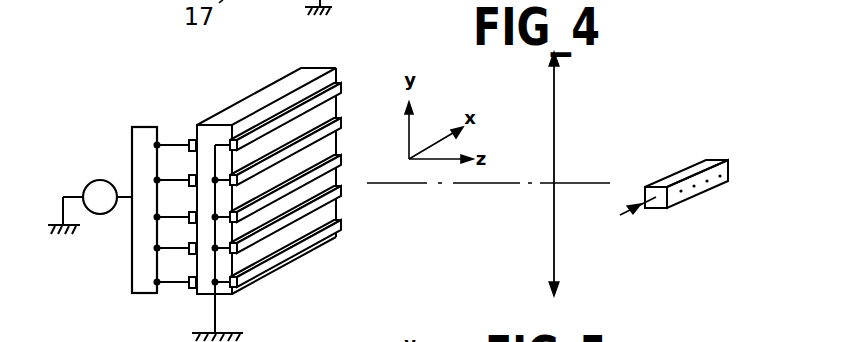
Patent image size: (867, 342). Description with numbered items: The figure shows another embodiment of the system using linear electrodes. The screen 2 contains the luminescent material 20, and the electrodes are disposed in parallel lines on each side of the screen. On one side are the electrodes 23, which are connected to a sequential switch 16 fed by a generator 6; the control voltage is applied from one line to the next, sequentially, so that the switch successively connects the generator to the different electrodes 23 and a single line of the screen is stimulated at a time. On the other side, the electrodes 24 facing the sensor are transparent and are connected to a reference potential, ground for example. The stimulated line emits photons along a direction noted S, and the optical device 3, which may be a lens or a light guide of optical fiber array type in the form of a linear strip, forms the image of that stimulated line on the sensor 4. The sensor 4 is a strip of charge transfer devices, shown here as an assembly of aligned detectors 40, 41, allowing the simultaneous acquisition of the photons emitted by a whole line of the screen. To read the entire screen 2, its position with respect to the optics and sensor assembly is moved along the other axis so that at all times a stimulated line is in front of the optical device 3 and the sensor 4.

The screen 2 is at (267, 182).
The optical device 3 is at (556, 238).
The sensor 4 is at (678, 180).
The generator 6 is at (97, 180).
The sequential switch 16 is at (141, 264).
The luminescent material 20 is at (246, 103).
The electrodes 23 is at (190, 140).
The electrodes 24 is at (278, 120).
The detector 40 is at (654, 186).
The detector 41 is at (672, 190).
The beam S is at (628, 214).